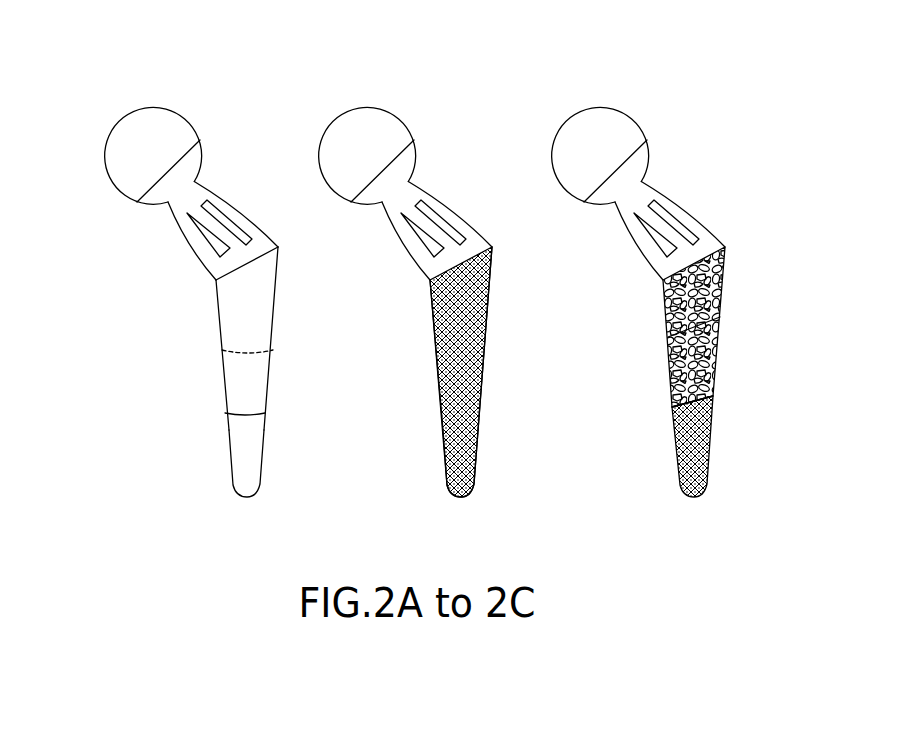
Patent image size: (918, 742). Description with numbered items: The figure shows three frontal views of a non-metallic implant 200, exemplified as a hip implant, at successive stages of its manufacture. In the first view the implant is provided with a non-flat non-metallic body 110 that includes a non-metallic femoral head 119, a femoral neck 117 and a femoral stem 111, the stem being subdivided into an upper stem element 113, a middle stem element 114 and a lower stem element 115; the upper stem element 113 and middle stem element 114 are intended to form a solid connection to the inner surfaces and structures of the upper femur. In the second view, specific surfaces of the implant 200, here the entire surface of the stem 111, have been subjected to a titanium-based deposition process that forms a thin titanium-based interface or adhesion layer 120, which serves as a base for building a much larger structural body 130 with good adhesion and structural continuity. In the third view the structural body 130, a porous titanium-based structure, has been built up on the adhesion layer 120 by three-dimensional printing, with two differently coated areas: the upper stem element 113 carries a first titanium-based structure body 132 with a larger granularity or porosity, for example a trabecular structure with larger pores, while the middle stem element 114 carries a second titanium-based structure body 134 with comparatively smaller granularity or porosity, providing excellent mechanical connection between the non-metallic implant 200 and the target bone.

In FIG. 2A, the non-metallic implant 200 is at (128, 100).
In FIG. 2A, the non-metallic body 110 is at (103, 110).
In FIG. 2A, the femoral stem 111 is at (160, 283).
In FIG. 2A, the upper stem element 113 is at (263, 298).
In FIG. 2B, the upper stem element 113 is at (495, 338).
In FIG. 2A, the middle stem element 114 is at (255, 377).
In FIG. 2B, the middle stem element 114 is at (502, 414).
In FIG. 2A, the lower stem element 115 is at (245, 428).
In FIG. 2C, the lower stem element 115 is at (656, 446).
In FIG. 2A, the femoral neck 117 is at (217, 237).
In FIG. 2A, the femoral head 119 is at (178, 128).
In FIG. 2B, the adhesion layer 120 is at (451, 372).
In FIG. 2C, the structural body 130 is at (698, 323).
In FIG. 2C, the first titanium-based structure body 132 is at (653, 321).
In FIG. 2C, the second titanium-based structure body 134 is at (649, 386).